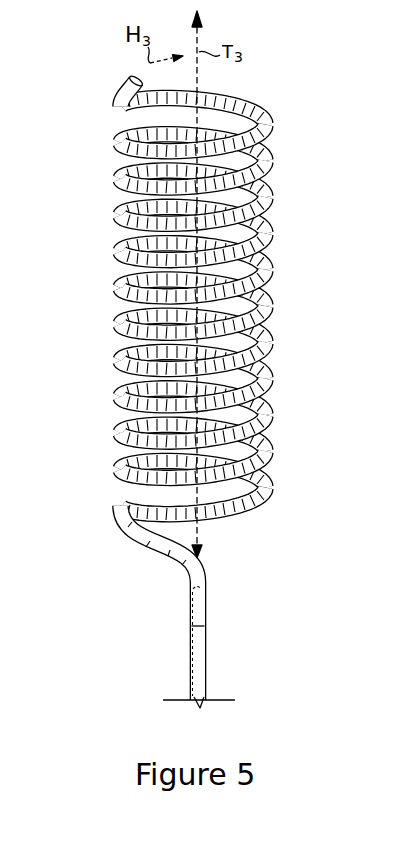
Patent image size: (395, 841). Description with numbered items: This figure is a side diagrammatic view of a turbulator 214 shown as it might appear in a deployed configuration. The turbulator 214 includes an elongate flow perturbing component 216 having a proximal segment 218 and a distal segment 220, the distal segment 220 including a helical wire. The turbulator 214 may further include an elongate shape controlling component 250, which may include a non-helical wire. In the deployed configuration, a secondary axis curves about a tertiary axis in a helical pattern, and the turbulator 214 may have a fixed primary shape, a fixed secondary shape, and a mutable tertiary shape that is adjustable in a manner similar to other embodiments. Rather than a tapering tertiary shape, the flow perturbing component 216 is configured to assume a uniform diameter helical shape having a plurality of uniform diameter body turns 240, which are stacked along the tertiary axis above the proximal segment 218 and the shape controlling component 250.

The turbulator 214 is at (191, 391).
The distal segment 220 is at (103, 449).
The uniform diameter body turns 240 is at (286, 412).
The elongate flow perturbing component 216 is at (115, 502).
The elongate shape controlling component 250 is at (205, 624).
The proximal segment 218 is at (218, 680).